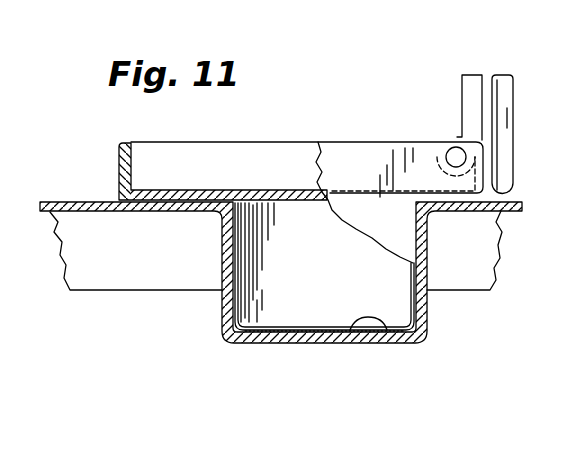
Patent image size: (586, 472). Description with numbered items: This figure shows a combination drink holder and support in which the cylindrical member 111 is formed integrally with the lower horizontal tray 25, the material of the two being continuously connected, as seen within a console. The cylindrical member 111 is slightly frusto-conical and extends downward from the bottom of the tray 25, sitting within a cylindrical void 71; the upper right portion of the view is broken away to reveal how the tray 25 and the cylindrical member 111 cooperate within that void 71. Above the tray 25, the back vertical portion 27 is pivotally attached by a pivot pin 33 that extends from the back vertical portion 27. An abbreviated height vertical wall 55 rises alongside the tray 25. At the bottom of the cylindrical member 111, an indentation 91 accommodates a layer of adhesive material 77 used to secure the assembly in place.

The lower horizontal tray 25 is at (202, 190).
The back vertical portion 27 is at (504, 103).
The pivot pin 33 is at (452, 149).
The abbreviated height vertical wall 55 is at (119, 163).
The cylindrical void 71 is at (268, 328).
The layer of adhesive material 77 is at (283, 325).
The indentation 91 is at (391, 334).
The cylindrical member 111 is at (331, 273).